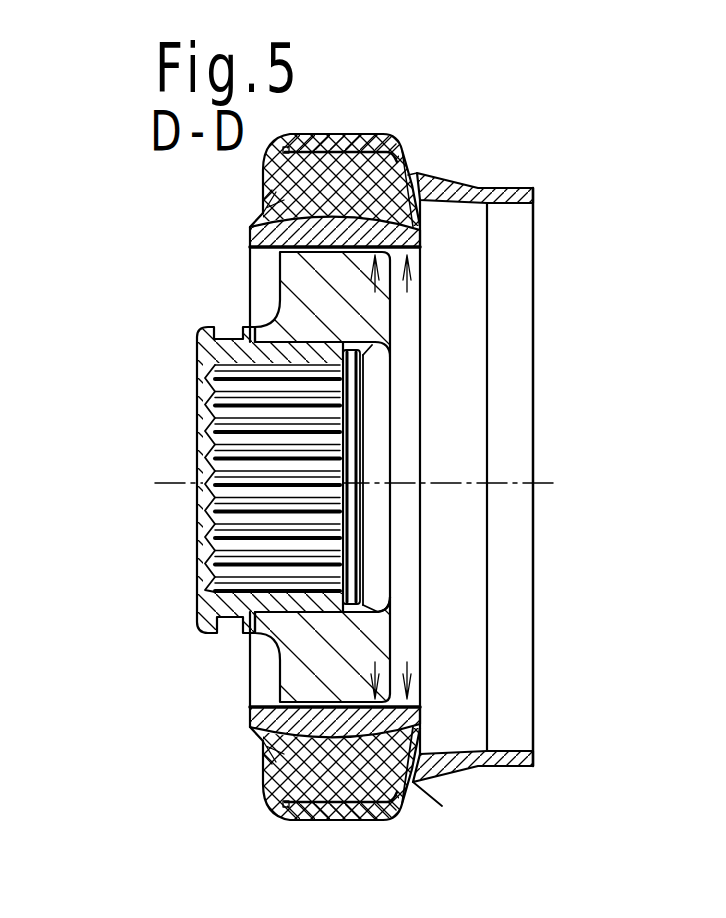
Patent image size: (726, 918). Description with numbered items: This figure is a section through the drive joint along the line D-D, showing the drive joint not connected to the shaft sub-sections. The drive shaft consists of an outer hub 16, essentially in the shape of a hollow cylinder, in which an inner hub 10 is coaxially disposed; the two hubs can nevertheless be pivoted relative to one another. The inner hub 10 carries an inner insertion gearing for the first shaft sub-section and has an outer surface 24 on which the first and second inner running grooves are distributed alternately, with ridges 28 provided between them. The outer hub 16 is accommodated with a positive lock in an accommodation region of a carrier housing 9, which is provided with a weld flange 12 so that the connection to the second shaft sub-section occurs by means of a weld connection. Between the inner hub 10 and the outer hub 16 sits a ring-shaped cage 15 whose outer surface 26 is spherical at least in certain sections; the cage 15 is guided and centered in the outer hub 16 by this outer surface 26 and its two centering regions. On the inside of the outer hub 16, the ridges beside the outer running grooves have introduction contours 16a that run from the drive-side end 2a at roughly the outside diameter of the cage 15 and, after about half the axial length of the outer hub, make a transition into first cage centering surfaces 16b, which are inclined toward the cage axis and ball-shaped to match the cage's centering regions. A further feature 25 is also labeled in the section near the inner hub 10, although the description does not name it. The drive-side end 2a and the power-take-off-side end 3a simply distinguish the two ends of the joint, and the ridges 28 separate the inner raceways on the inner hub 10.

The drive-side end 2a is at (186, 348).
The power-take-off-side end 3a is at (408, 635).
The carrier housing 9 is at (322, 140).
The inner hub 10 is at (372, 340).
The weld flange 12 is at (490, 194).
The ring-shaped cage 15 is at (398, 237).
The outer hub 16 is at (340, 178).
The introduction contours 16a is at (257, 176).
The first cage centering surfaces 16b is at (402, 168).
The outer surface 24 is at (392, 310).
The channel 25 is at (423, 248).
The outer surface 26 is at (368, 661).
The ridges 28 is at (333, 638).